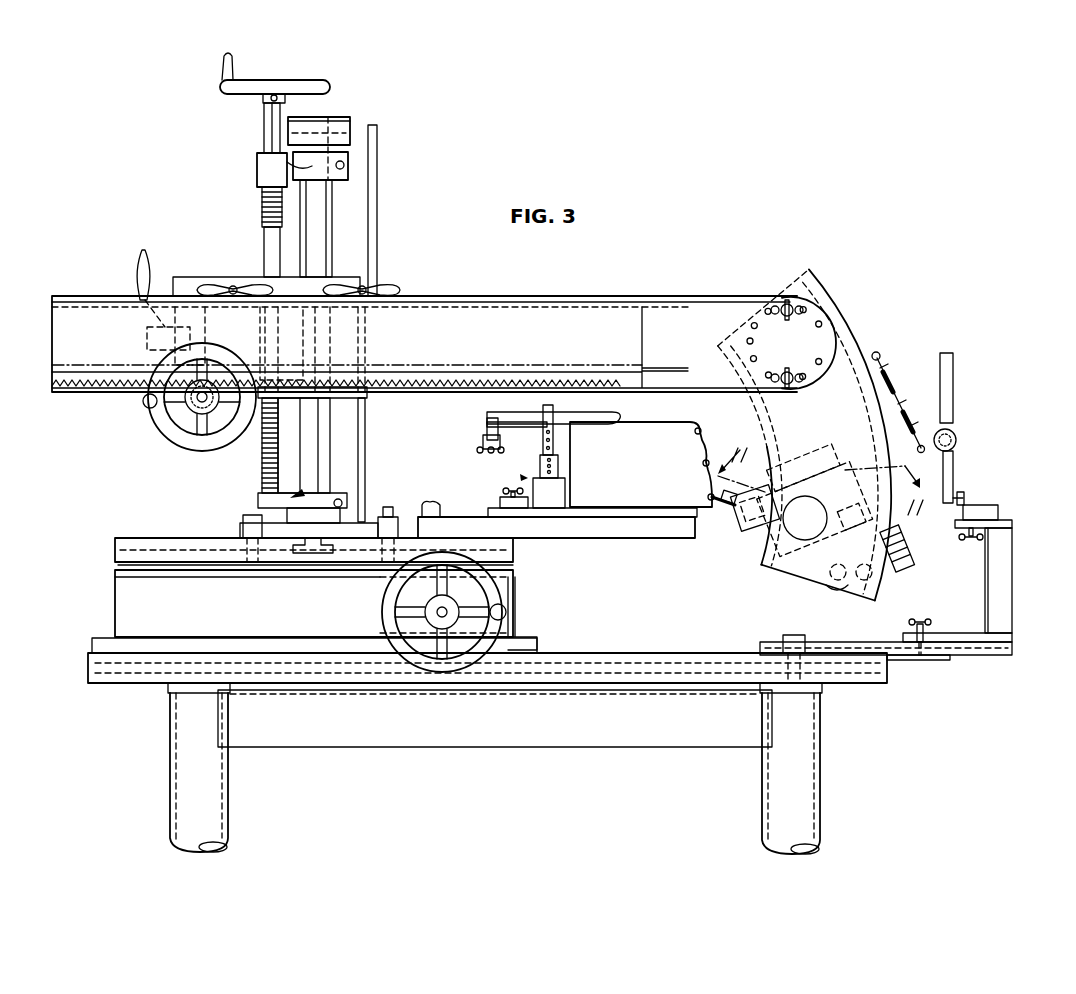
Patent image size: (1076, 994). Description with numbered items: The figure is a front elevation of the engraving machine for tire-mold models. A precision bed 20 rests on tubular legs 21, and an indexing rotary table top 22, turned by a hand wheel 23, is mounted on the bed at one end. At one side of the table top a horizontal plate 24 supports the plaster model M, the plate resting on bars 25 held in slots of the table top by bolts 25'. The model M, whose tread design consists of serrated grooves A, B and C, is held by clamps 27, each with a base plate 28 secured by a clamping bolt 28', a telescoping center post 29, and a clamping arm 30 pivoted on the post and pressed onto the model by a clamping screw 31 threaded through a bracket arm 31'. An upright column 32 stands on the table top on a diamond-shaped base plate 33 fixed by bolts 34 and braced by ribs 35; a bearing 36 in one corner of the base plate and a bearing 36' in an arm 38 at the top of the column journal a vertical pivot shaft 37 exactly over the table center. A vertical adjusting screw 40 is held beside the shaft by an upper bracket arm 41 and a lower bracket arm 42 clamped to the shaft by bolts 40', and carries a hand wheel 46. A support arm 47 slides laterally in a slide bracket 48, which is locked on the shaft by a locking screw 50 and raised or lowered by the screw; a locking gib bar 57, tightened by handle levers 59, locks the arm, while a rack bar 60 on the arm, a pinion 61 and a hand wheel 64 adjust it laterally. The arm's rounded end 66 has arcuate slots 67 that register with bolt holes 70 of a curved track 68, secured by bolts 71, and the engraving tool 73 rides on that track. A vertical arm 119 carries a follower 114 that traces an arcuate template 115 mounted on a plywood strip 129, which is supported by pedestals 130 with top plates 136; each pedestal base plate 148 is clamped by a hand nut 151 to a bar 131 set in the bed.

The bed 20 is at (105, 672).
The tubular legs 21 is at (219, 834).
The indexing rotary table top 22 is at (125, 601).
The hand wheel 23 is at (453, 668).
The horizontal plate 24 is at (655, 520).
The bars 25 is at (592, 539).
The bolts 25' is at (437, 498).
The clamps 27 is at (524, 477).
The base plate 28 is at (550, 522).
The clamping bolt 28' is at (495, 496).
The center post 29 is at (540, 463).
The clamping arm 30 is at (630, 410).
The clamping screw 31 is at (493, 439).
The bracket arm 31' is at (468, 419).
The upright supporting column 32 is at (378, 242).
The base plate 33 is at (240, 530).
The bolts 34 is at (243, 518).
The ribs 35 is at (265, 512).
The anti-friction bearing 36 is at (299, 565).
The anti-friction bearing 36' is at (342, 183).
The vertical pivot shaft 37 is at (326, 456).
The arm 38 is at (352, 133).
The vertical adjusting screw 40 is at (247, 232).
The bolts 40' is at (354, 329).
The upper bracket arm 41 is at (258, 172).
The lower bracket arm 42 is at (292, 497).
The hand wheel 46 is at (270, 88).
The support arm 47 is at (450, 298).
The slide bracket 48 is at (232, 262).
The locking screw 50 is at (212, 345).
The locking gib bar 57 is at (184, 276).
The handle levers 59 is at (266, 290).
The rack bar 60 is at (52, 379).
The pinion 61 is at (217, 425).
The hand wheel 64 is at (160, 428).
The rounded outer end 66 is at (828, 312).
The arcuate slots 67 is at (797, 305).
The curved track 68 is at (857, 339).
The bolt holes 70 is at (817, 343).
The bolts 71 is at (783, 304).
The engraving tool 73 is at (733, 511).
The follower 114 is at (964, 496).
The arcuate template 115 is at (966, 503).
The vertical arm 119 is at (947, 400).
The curved strip 129 is at (998, 516).
The pedestals 130 is at (1005, 586).
The bars 131 is at (970, 657).
The top plates 136 is at (1012, 525).
The base plate 148 is at (1012, 639).
The hand nut 151 is at (930, 618).
The plaster model M is at (641, 464).
The serrated groove A is at (702, 431).
The serrated groove B is at (703, 463).
The serrated groove C is at (708, 497).